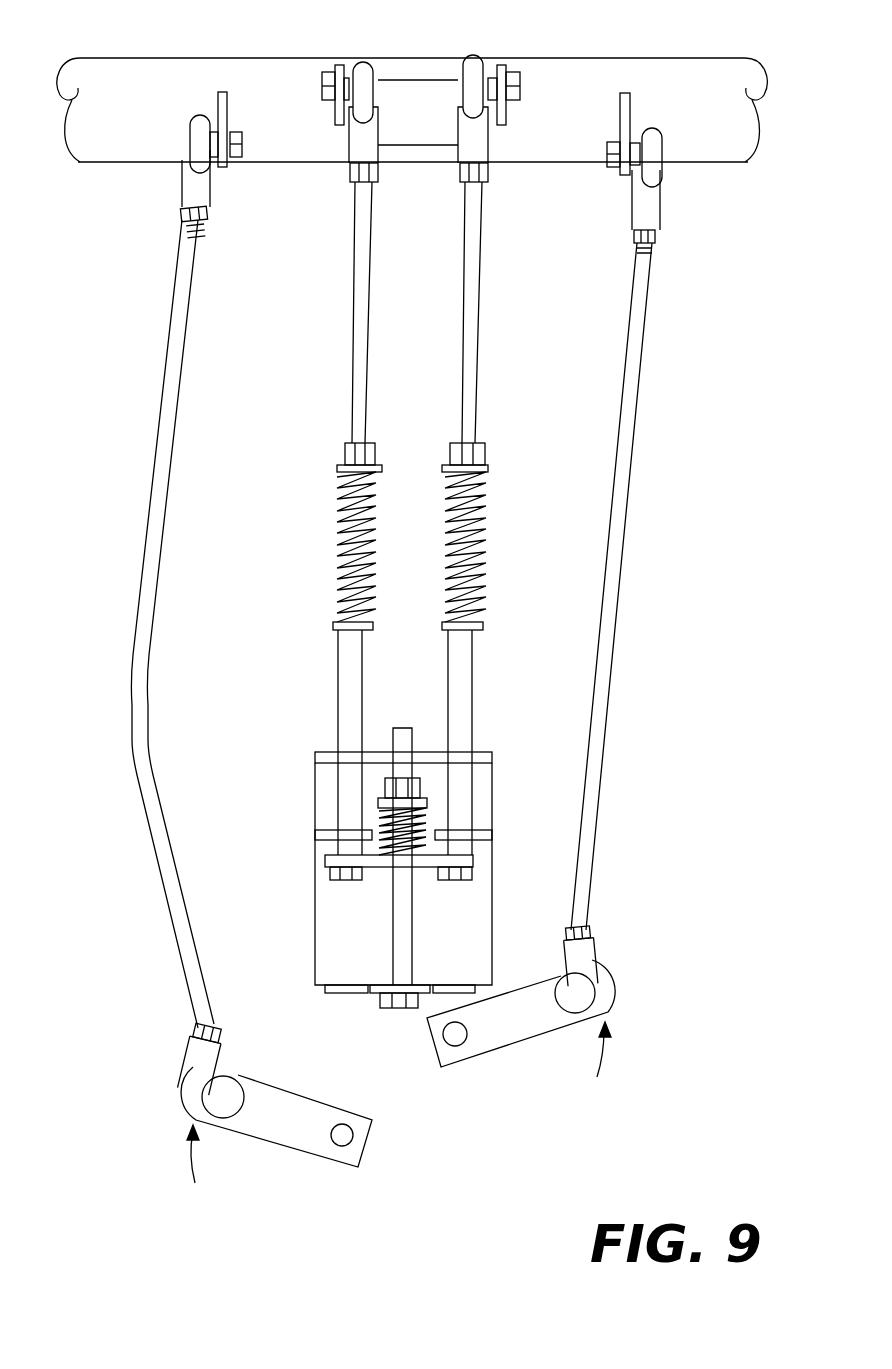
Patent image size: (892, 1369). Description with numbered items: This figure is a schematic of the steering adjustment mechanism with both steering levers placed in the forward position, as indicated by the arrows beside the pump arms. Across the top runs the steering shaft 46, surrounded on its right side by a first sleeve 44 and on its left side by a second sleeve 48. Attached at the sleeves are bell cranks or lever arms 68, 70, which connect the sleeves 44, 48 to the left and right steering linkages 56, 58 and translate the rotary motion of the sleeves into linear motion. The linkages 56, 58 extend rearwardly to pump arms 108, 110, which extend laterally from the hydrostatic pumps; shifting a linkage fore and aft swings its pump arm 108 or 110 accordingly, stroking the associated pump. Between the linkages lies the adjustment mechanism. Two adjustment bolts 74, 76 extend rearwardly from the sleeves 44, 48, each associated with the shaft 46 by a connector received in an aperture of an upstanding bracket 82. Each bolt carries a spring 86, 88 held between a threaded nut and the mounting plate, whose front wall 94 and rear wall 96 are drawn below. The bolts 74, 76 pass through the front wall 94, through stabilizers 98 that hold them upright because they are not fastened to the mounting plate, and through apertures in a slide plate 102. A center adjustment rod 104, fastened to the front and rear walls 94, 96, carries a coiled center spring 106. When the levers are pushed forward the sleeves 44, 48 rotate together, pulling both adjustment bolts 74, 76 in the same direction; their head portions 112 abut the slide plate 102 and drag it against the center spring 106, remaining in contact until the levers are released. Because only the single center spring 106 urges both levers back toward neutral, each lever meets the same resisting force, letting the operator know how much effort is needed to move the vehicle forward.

The first sleeve 44 is at (680, 67).
The second sleeve 48 is at (158, 63).
The steering shaft 46 is at (423, 85).
The upstanding bracket 82 is at (340, 65).
The bell crank or lever arm 68 is at (223, 167).
The bell crank or lever arm 70 is at (625, 173).
The adjustment bolt 74 is at (358, 288).
The adjustment bolt 76 is at (480, 288).
The left steering linkage 56 is at (169, 387).
The right steering linkage 58 is at (629, 389).
The spring 86 is at (345, 497).
The spring 88 is at (482, 494).
The front wall 94 is at (322, 758).
The rear wall 96 is at (377, 990).
The stabilizers 98 is at (322, 835).
The slide plate 102 is at (420, 862).
The center adjustment rod 104 is at (398, 937).
The spring 106 is at (377, 820).
The pump arm 108 is at (262, 1128).
The pump arm 110 is at (485, 1040).
The head portions 112 is at (325, 873).